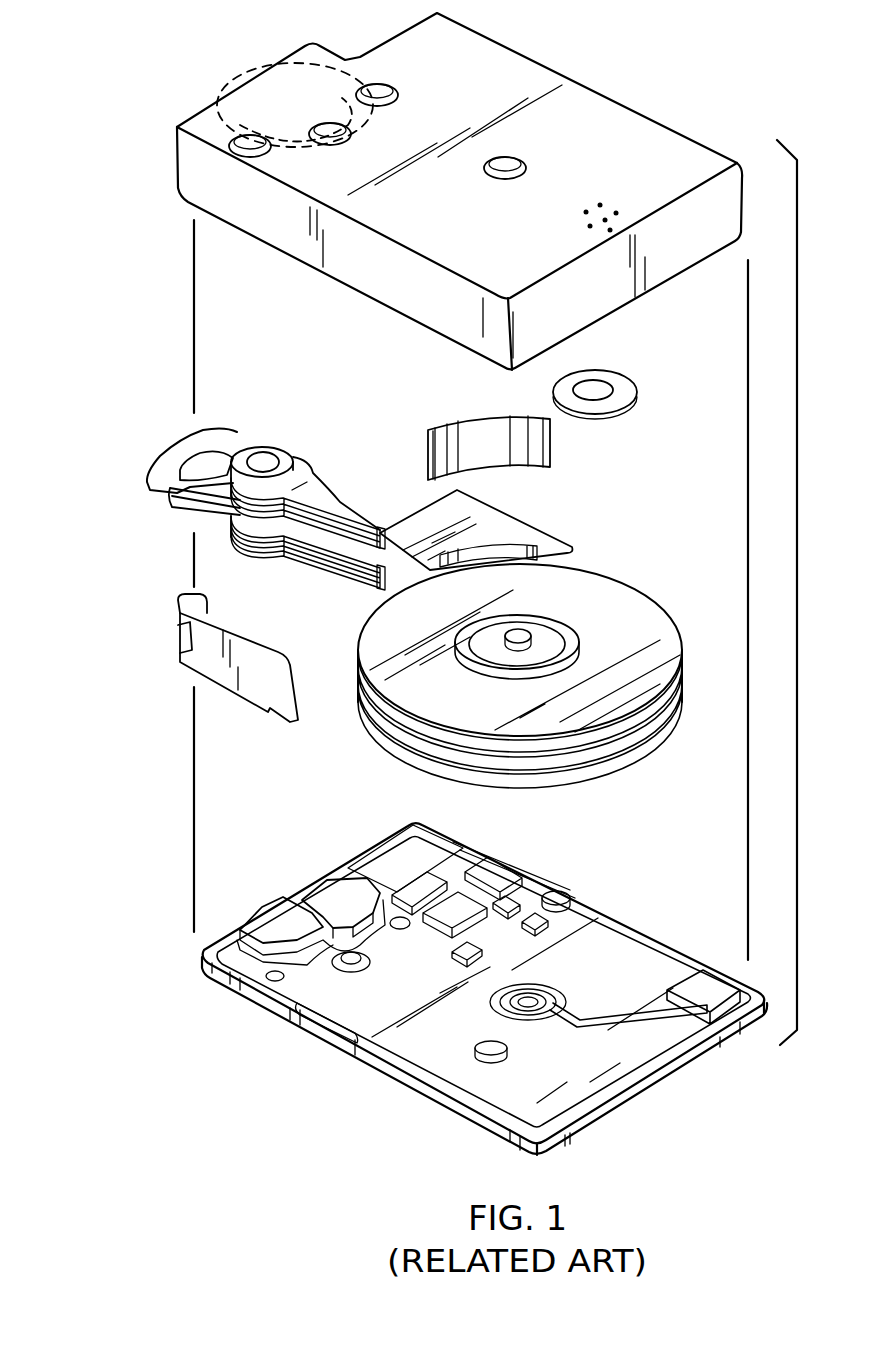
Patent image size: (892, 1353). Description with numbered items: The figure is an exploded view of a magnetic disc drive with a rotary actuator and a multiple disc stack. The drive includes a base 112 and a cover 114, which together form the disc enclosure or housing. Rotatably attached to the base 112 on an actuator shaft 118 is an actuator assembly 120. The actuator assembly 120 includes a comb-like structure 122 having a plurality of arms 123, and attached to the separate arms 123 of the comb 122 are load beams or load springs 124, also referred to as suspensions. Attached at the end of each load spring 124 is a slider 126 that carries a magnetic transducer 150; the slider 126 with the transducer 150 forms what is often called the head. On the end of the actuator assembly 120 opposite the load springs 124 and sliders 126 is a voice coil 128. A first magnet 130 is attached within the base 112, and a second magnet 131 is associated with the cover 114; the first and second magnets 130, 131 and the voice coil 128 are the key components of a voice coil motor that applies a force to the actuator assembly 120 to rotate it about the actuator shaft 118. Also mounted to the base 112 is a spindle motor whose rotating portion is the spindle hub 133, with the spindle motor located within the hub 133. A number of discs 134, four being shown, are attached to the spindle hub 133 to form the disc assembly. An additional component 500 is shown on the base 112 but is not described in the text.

The base 112 is at (650, 953).
The cover 114 is at (627, 128).
The actuator shaft 118 is at (263, 452).
The actuator assembly 120 is at (217, 507).
The comb-like structure 122 is at (290, 565).
The arms 123 is at (312, 472).
The load springs 124 is at (335, 500).
The slider 126 is at (382, 540).
The voice coil 128 is at (170, 460).
The first magnet 130 is at (263, 920).
The second magnet 131 is at (283, 72).
The spindle hub 133 is at (523, 637).
The discs 134 is at (645, 618).
The magnetic transducer 150 is at (398, 533).
The integrated circuit chip 500 is at (495, 872).